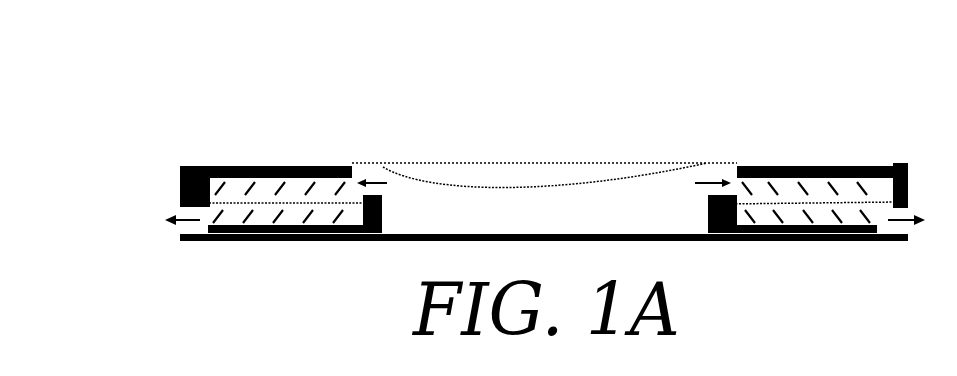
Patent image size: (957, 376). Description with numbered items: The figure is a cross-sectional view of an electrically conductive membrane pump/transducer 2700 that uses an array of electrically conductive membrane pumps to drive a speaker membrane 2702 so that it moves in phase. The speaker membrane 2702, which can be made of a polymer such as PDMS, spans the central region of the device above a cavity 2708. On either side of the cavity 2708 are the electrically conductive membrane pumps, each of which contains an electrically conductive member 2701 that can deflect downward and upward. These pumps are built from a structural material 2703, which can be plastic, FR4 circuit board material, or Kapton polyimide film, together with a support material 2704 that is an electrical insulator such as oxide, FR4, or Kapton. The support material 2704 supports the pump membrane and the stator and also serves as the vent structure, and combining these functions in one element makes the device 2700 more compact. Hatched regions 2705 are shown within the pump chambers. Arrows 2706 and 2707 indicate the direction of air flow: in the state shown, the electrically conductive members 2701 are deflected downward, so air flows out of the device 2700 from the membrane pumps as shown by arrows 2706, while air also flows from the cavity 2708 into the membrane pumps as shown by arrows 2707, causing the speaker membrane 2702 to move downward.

The electrically conductive membrane pump/transducer 2700 is at (747, 116).
The electrically conductive member 2701 is at (303, 200).
The speaker membrane 2702 is at (489, 178).
The structural material 2703 is at (175, 163).
The support material 2704 is at (175, 183).
The grating structure 2705 is at (267, 168).
The arrows 2706 is at (148, 218).
The arrows 2707 is at (377, 176).
The cavity 2708 is at (655, 219).